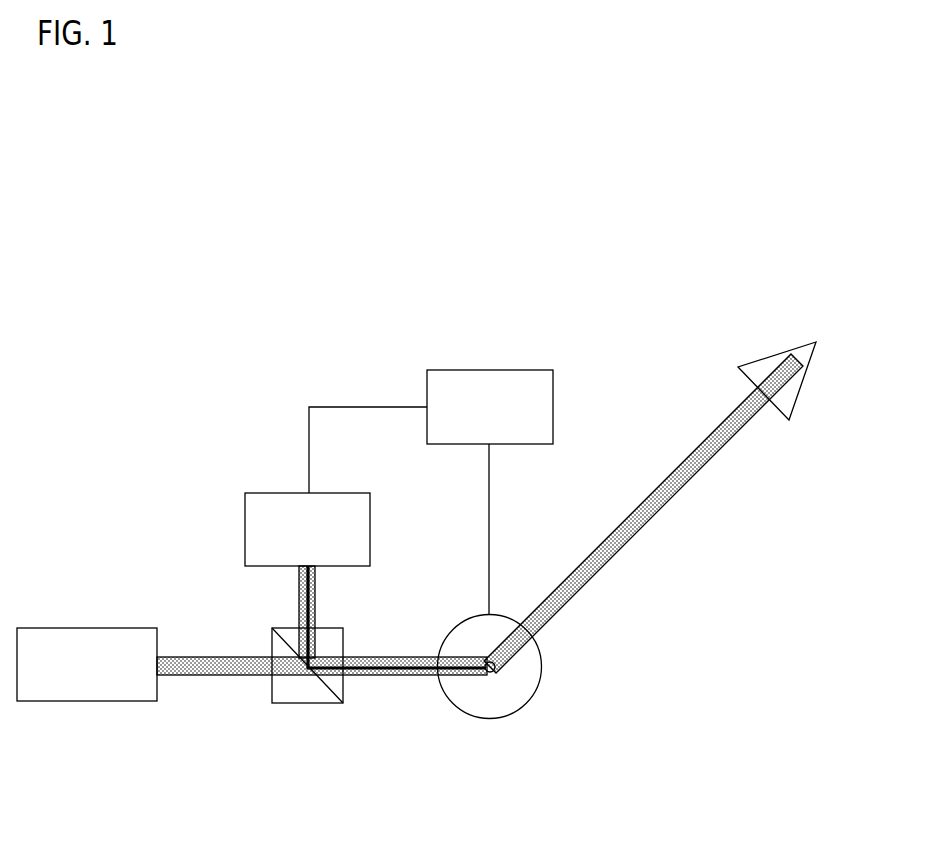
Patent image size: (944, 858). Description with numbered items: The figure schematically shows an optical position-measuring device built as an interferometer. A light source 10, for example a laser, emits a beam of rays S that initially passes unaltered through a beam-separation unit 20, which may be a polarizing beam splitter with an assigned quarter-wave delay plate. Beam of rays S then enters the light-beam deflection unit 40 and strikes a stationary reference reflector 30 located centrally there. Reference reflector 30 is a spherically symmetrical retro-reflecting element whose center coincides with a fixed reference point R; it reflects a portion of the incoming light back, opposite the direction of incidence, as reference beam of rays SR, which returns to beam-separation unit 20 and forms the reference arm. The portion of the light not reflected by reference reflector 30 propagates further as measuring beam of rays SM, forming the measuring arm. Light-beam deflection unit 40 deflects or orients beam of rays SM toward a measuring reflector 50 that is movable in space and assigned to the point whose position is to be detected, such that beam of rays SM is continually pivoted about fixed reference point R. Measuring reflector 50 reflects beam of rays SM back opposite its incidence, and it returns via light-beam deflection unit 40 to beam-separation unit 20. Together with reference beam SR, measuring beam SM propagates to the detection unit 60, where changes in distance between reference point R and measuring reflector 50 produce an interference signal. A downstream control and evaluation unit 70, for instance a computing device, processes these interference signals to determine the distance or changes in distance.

The light source 10 is at (62, 655).
The beam-separation unit 20 is at (290, 683).
The stationary reference reflector 30 is at (482, 677).
The light-beam deflection unit 40 is at (515, 695).
The measuring reflector 50 is at (755, 372).
The detection unit 60 is at (262, 507).
The control and evaluation unit 70 is at (487, 393).
The beam of rays S is at (210, 657).
The reference beam of rays SR is at (410, 660).
The measuring beam of rays SM is at (702, 455).
The fixed reference point R is at (497, 659).